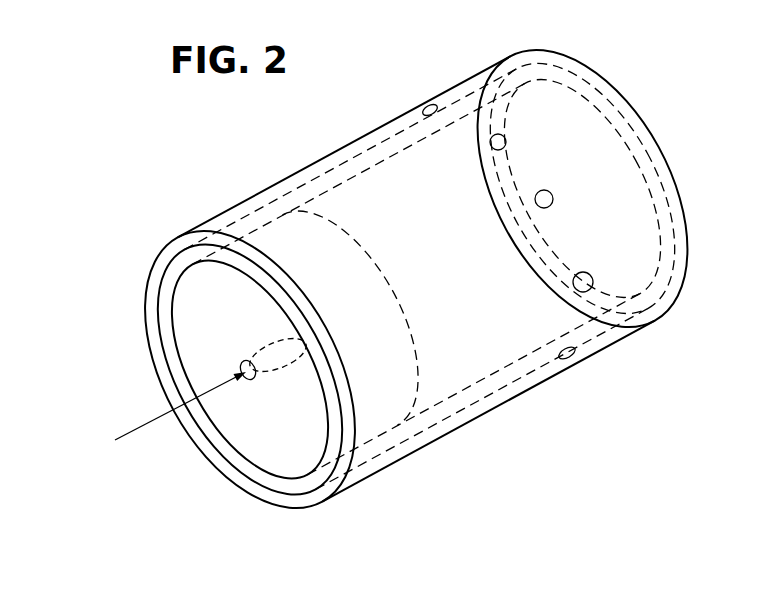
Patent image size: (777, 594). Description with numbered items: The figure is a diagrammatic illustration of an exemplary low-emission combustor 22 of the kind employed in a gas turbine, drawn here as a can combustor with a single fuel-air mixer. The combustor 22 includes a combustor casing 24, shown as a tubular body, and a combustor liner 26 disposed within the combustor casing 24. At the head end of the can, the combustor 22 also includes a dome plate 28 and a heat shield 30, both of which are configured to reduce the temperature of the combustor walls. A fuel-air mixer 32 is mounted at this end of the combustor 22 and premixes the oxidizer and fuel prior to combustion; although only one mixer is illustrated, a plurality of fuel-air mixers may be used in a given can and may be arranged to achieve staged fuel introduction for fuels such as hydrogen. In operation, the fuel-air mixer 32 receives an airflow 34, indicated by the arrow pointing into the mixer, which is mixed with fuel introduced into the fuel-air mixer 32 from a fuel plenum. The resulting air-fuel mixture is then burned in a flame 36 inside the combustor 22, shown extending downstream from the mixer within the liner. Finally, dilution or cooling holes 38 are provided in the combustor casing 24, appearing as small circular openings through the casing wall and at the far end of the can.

The low-emission combustor 22 is at (146, 148).
The combustor casing 24 is at (226, 481).
The combustor liner 26 is at (410, 168).
The dome plate 28 is at (163, 288).
The heat shield 30 is at (285, 240).
The fuel-air mixer 32 is at (255, 381).
The airflow 34 is at (159, 417).
The flame 36 is at (252, 351).
The dilution or cooling holes 38 is at (583, 280).